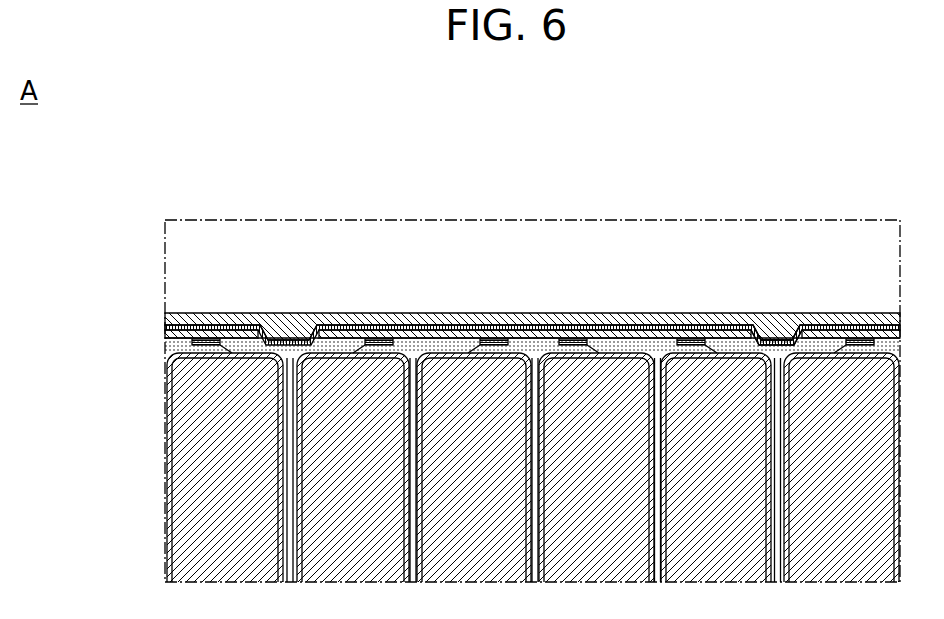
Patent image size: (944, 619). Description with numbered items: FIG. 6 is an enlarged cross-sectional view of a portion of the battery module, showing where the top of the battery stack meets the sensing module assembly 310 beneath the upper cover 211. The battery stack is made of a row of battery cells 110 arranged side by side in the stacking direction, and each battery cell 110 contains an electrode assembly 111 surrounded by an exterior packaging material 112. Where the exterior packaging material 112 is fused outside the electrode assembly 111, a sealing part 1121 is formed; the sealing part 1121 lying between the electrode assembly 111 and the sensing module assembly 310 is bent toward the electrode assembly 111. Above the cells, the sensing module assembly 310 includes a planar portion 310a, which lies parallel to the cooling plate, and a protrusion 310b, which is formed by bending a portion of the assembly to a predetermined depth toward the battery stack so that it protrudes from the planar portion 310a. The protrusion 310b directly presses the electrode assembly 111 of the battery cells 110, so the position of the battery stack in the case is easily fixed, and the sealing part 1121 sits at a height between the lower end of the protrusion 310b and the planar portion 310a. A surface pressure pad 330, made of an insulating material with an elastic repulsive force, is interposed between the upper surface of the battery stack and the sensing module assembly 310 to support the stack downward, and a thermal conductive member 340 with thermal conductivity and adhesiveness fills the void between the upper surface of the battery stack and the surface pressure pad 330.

The battery cell 110 is at (80, 332).
The electrode assembly 111 is at (180, 493).
The exterior packaging material 112 is at (167, 420).
The sealing part 1121 is at (193, 343).
The upper cover 211 is at (294, 317).
The surface pressure pad 330 is at (522, 333).
The thermal conductive member 340 is at (428, 330).
The sensing module assembly 310 is at (817, 153).
The planar portion 310a is at (706, 317).
The protrusion 310b is at (800, 332).